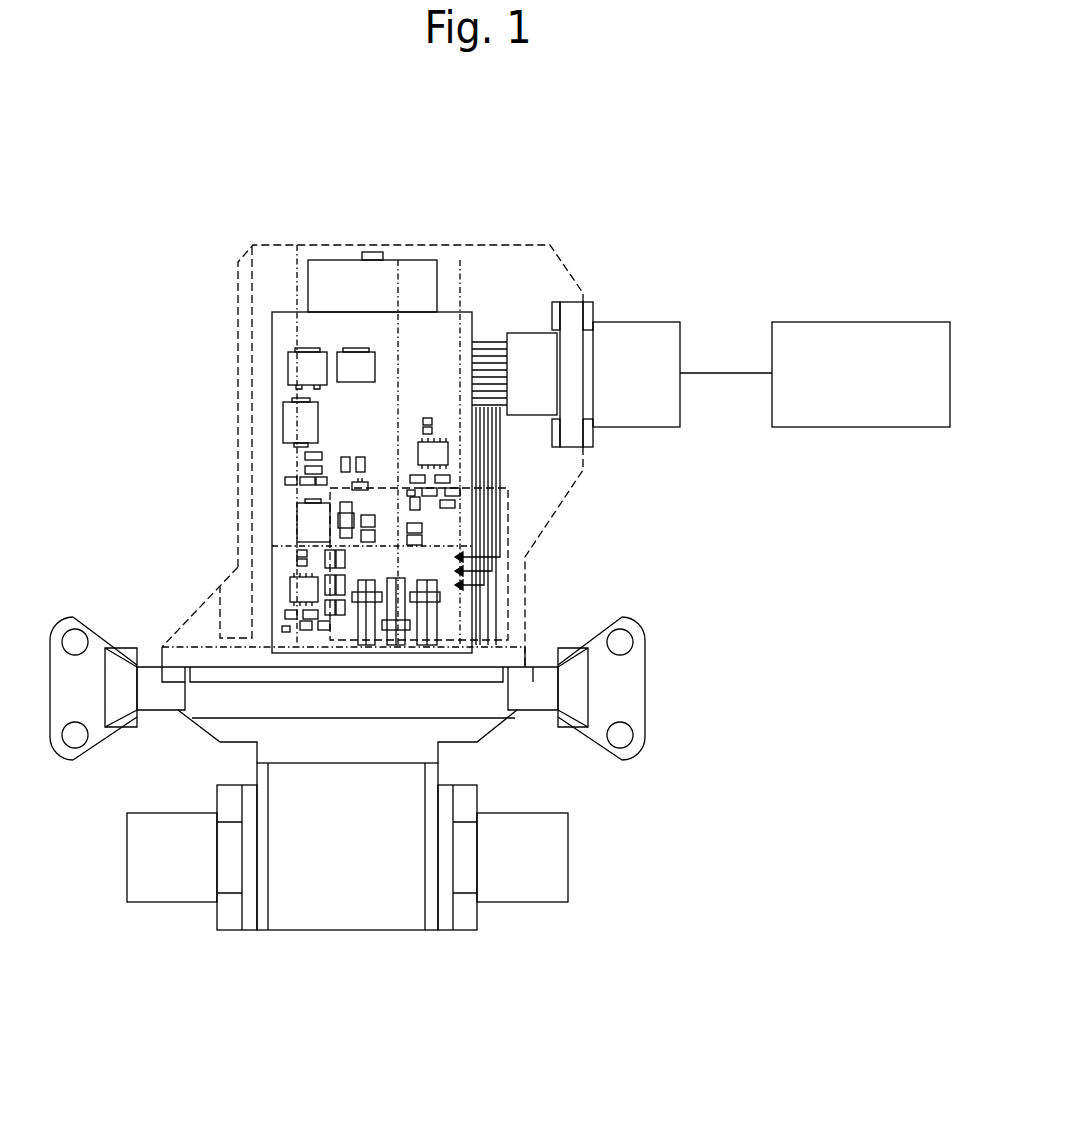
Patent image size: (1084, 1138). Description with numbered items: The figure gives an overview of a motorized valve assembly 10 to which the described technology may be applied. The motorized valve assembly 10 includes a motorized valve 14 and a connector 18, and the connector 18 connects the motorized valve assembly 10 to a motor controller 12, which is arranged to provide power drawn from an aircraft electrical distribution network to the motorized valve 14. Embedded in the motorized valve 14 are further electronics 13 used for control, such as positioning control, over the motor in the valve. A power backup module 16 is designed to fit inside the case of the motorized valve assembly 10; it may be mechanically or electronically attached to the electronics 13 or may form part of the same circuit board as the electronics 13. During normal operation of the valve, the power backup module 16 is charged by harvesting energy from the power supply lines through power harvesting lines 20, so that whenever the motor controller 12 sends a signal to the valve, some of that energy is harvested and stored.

The motorized valve assembly 10 is at (658, 121).
The motor controller 12 is at (864, 427).
The electronics 13 is at (341, 320).
The motorized valve 14 is at (167, 612).
The power backup module 16 is at (278, 558).
The connector 18 is at (657, 338).
The power harvesting lines 20 is at (515, 551).